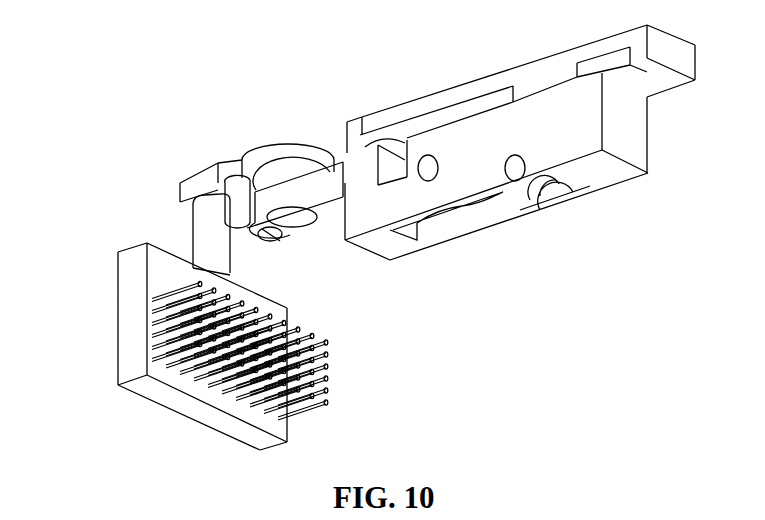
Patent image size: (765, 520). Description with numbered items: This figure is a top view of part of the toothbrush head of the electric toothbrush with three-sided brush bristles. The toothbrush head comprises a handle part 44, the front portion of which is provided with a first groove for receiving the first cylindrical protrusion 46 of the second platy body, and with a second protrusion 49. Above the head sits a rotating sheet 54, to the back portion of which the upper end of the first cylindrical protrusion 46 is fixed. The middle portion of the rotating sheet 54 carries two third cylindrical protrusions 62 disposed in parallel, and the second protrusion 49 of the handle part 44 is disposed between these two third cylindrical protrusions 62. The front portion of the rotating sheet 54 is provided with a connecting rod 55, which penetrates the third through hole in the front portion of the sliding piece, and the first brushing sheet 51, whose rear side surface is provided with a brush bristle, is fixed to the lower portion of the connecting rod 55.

The handle part 44 is at (582, 147).
The first cylindrical protrusion 46 is at (292, 215).
The second protrusion 49 is at (275, 236).
The first brushing sheet 51 is at (127, 323).
The rotating sheet 54 is at (250, 163).
The connecting rod 55 is at (200, 240).
The third cylindrical protrusions 62 is at (227, 200).